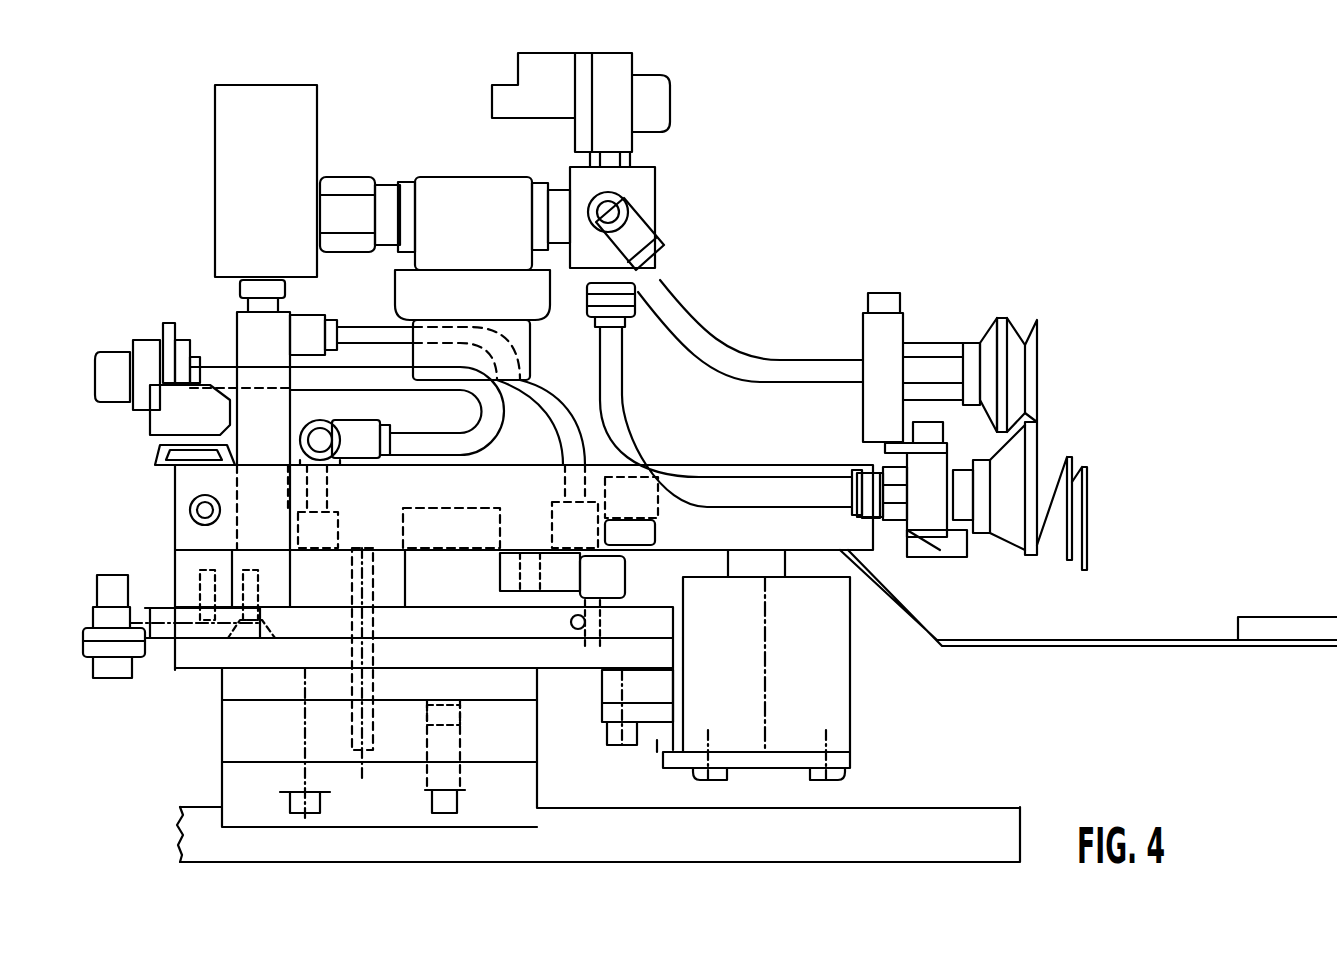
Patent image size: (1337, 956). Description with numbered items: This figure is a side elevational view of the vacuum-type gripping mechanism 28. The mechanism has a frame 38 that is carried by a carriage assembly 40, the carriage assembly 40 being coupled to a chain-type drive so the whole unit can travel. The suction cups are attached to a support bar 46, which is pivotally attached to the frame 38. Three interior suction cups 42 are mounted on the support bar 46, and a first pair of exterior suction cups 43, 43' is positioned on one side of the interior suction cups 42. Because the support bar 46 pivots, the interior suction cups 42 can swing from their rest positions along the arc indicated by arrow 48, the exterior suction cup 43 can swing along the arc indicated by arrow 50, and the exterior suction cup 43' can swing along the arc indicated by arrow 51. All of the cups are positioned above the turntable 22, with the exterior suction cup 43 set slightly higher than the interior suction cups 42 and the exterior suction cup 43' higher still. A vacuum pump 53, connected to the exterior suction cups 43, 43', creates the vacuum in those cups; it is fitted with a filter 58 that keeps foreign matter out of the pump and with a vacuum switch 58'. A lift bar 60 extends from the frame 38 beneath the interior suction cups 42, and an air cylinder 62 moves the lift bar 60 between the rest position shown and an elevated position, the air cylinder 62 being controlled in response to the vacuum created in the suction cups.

The turntable 22 is at (928, 808).
The vacuum-type gripping mechanism 28 is at (776, 188).
The frame 38 is at (175, 494).
The carriage assembly 40 is at (222, 672).
The interior suction cups 42 is at (1087, 492).
The exterior suction cup 43 is at (943, 519).
The exterior suction cup 43' is at (944, 359).
The support bar 46 is at (960, 557).
The arrow 48 is at (1086, 458).
The arrow 50 is at (1067, 412).
The arrow 51 is at (1016, 258).
The vacuum pump 53 is at (262, 87).
The filter 58 is at (445, 249).
The vacuum switch 58' is at (588, 176).
The lift bar 60 is at (1120, 646).
The air cylinder 62 is at (850, 708).